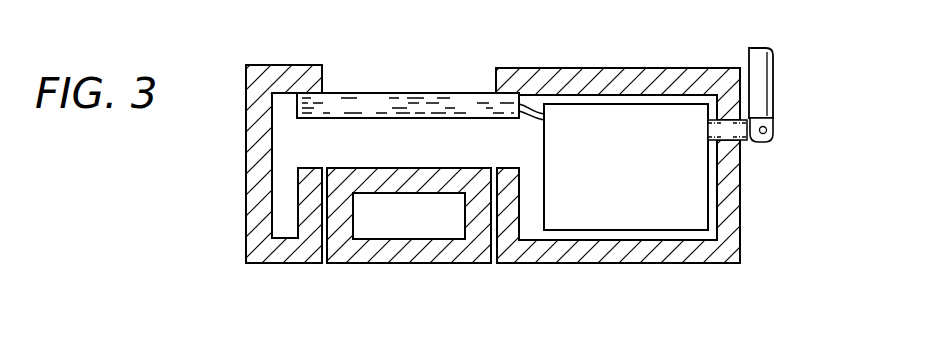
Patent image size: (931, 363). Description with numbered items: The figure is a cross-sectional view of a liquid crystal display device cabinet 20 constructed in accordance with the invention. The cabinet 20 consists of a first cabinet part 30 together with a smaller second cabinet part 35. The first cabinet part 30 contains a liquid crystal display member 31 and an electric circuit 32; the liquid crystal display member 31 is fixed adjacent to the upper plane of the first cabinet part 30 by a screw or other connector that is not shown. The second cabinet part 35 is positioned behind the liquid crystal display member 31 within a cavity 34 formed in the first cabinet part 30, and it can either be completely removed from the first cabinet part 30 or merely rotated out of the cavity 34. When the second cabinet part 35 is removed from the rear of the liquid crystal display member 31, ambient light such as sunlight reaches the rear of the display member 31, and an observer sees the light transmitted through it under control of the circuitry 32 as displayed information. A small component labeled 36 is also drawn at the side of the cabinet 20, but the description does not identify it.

The cabinet 20 is at (224, 254).
The first cabinet part 30 is at (590, 83).
The liquid crystal display member 31 is at (412, 97).
The electric circuit 32 is at (622, 220).
The cavity 34 is at (493, 263).
The second cabinet part 35 is at (355, 263).
The valve lever 36 is at (768, 92).